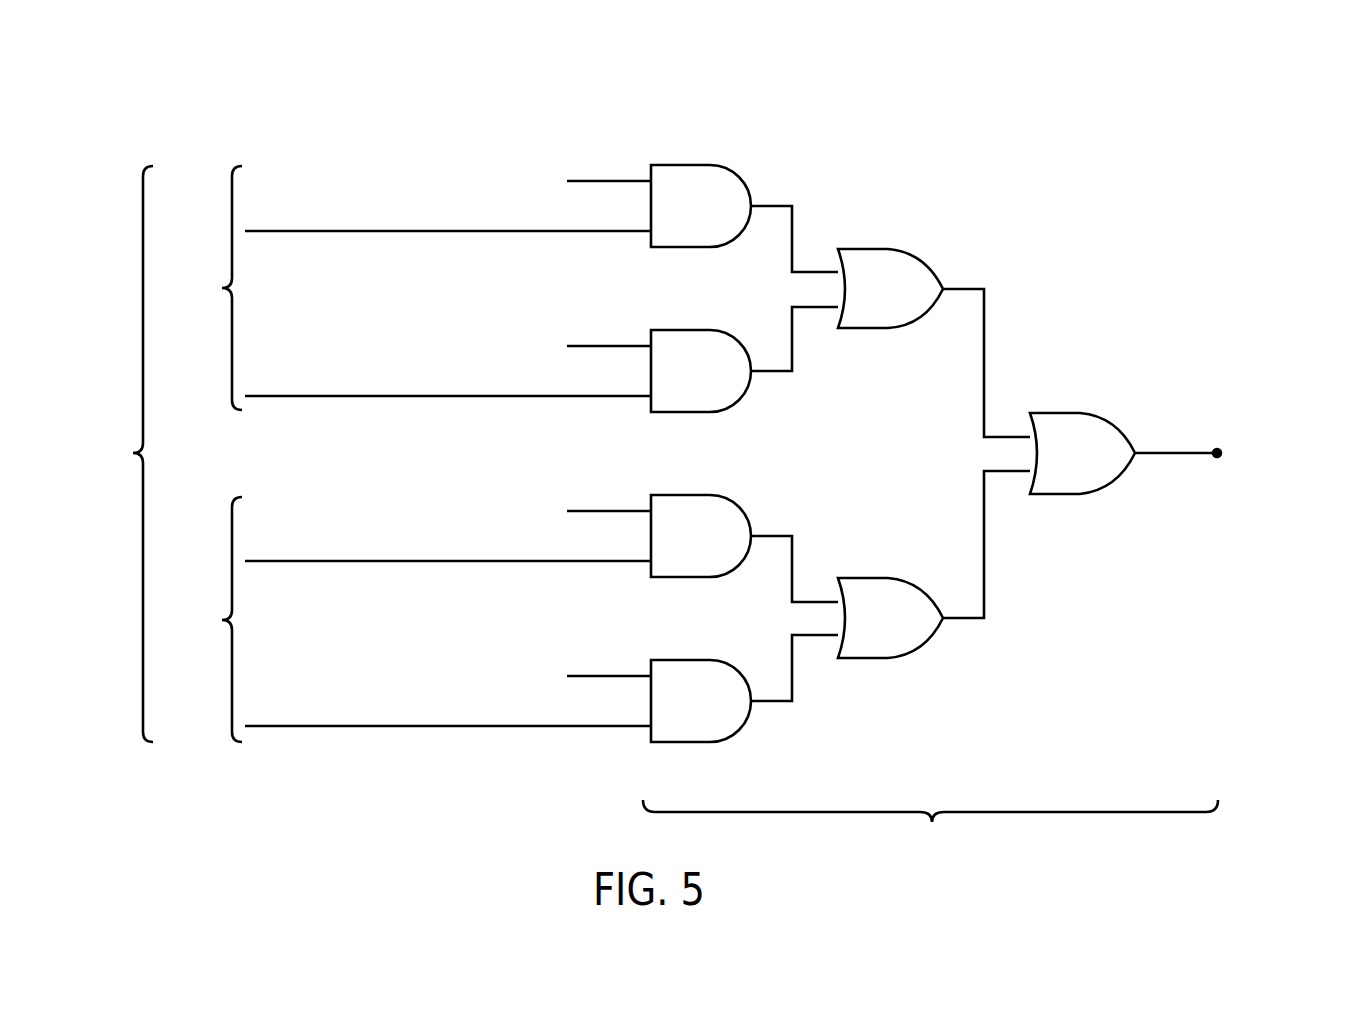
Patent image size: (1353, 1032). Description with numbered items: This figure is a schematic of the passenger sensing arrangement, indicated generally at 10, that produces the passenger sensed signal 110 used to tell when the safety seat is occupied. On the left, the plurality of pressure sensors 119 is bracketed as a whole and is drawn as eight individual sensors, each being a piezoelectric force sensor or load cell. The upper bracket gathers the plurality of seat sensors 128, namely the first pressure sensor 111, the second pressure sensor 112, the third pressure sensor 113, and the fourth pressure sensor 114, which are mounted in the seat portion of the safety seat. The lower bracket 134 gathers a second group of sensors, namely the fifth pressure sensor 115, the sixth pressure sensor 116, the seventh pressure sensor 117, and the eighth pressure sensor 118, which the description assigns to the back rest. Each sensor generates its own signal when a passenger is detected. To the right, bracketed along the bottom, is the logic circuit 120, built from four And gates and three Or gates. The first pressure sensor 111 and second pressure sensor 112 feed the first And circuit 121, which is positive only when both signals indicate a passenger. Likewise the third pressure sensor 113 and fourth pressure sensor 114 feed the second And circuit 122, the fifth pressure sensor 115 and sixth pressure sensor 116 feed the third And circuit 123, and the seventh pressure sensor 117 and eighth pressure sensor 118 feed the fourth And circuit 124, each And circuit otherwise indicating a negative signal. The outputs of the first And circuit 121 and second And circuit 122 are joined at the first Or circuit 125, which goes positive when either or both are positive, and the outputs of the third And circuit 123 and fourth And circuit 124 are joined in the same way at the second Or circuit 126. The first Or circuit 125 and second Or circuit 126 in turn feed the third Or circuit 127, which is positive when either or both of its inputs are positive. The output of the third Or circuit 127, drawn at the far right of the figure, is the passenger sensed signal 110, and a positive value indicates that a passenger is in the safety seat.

The passenger sensing system 10 is at (1143, 167).
The passenger sensed signal 110 is at (1243, 297).
The first pressure sensor 111 is at (563, 135).
The second pressure sensor 112 is at (558, 197).
The third pressure sensor 113 is at (563, 300).
The fourth pressure sensor 114 is at (558, 362).
The fifth pressure sensor 115 is at (563, 465).
The sixth pressure sensor 116 is at (558, 527).
The seventh pressure sensor 117 is at (563, 630).
The eighth pressure sensor 118 is at (558, 692).
The plurality of pressure sensors 119 is at (113, 454).
The logic circuit 120 is at (930, 832).
The first And circuit 121 is at (703, 192).
The second And circuit 122 is at (703, 357).
The third And circuit 123 is at (703, 522).
The fourth And circuit 124 is at (703, 687).
The first Or circuit 125 is at (897, 273).
The second Or circuit 126 is at (897, 602).
The third Or circuit 127 is at (1085, 477).
The plurality of seat sensors 128 is at (199, 288).
The second seat sensor group 134 is at (199, 619).